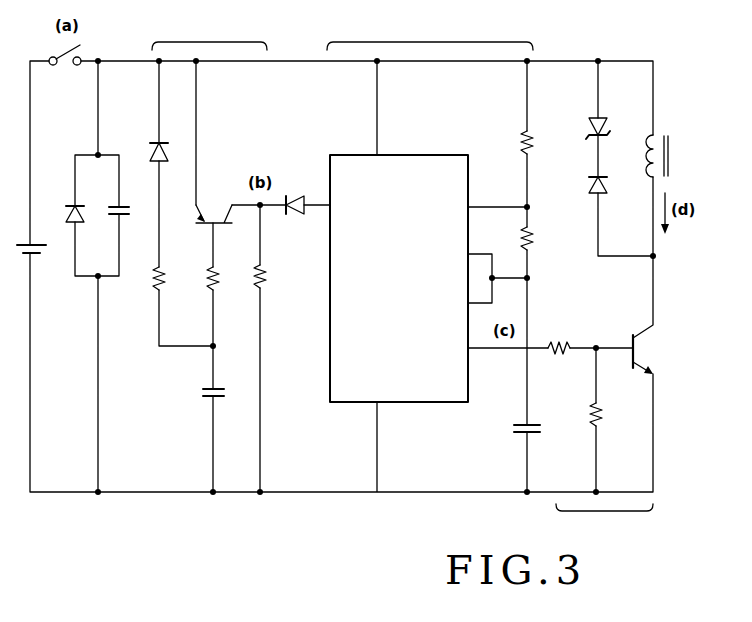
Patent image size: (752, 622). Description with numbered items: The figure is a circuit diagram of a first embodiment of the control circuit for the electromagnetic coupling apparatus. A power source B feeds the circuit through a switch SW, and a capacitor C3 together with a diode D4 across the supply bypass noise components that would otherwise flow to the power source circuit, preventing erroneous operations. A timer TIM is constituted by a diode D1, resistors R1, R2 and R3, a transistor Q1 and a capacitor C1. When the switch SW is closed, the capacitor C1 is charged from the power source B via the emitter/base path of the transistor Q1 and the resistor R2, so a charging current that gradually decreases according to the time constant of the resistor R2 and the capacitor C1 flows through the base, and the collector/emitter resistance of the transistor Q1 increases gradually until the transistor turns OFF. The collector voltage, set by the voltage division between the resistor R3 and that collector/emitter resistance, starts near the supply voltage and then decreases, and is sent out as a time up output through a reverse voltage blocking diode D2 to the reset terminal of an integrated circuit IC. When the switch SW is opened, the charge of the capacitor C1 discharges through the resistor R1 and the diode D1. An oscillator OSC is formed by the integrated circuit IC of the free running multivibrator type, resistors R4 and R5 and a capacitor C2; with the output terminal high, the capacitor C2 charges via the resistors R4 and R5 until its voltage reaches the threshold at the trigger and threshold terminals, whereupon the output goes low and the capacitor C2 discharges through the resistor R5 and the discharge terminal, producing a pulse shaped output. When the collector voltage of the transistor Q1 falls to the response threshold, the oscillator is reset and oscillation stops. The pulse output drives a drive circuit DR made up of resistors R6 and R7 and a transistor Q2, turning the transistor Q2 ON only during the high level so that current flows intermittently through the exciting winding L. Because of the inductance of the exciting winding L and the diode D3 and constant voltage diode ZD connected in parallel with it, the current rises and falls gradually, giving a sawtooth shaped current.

The switch SW is at (66, 68).
The power source B is at (44, 252).
The diode D4 is at (66, 202).
The capacitor C3 is at (103, 204).
The diode D1 is at (168, 140).
The transistor Q1 is at (213, 208).
The resistor R1 is at (168, 274).
The resistor R2 is at (222, 274).
The capacitor C1 is at (202, 393).
The reverse voltage blocking diode D2 is at (292, 196).
The resistor R3 is at (266, 277).
The integrated circuit IC is at (399, 278).
The resistor R4 is at (521, 146).
The resistor R5 is at (534, 242).
The capacitor C2 is at (514, 430).
The constant voltage diode ZD is at (589, 128).
The diode D3 is at (589, 186).
The exciting winding L is at (647, 158).
The resistor R6 is at (559, 342).
The transistor Q2 is at (632, 345).
The resistor R7 is at (590, 418).
The timer TIM is at (209, 33).
The oscillator OSC is at (430, 33).
The drive circuit DR is at (604, 519).